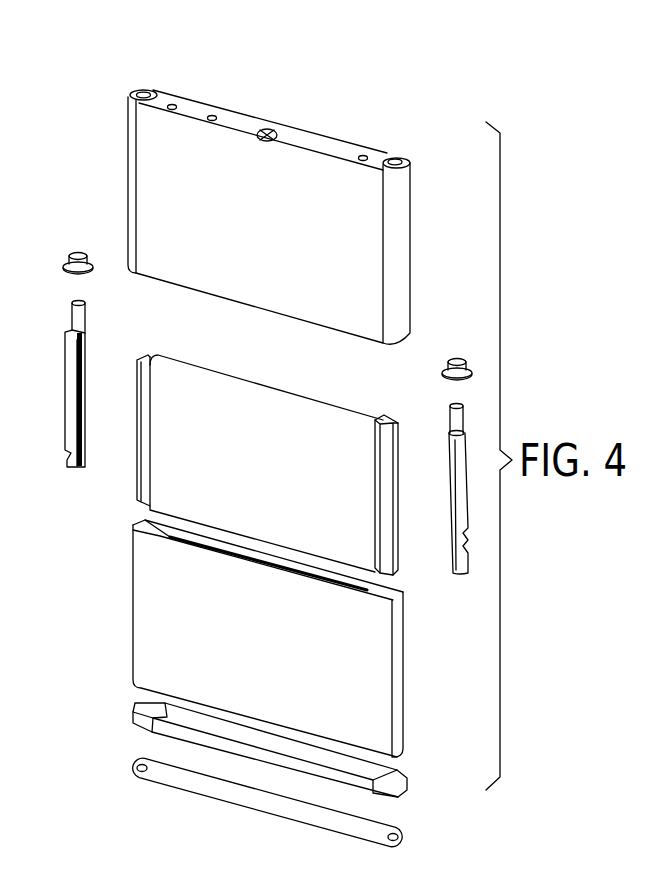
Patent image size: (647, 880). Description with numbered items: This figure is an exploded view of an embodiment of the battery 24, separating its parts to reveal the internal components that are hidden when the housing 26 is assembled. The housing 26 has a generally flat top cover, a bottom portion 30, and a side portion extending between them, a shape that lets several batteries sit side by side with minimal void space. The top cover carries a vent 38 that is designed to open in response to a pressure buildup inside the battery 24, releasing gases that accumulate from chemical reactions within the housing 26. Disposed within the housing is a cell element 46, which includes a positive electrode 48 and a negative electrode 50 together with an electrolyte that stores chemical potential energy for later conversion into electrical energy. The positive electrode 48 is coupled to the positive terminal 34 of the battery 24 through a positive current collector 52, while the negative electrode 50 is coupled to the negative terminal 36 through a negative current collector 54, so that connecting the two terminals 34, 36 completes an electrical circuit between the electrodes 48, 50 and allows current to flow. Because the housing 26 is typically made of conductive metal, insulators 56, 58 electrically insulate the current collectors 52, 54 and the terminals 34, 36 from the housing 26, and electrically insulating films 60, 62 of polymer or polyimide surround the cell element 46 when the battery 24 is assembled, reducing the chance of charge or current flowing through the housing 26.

The battery 24 is at (360, 96).
The housing 26 is at (270, 234).
The bottom portion 30 is at (262, 812).
The positive terminal 34 is at (72, 303).
The negative terminal 36 is at (450, 420).
The vent 38 is at (277, 130).
The cell element 46 is at (274, 479).
The positive electrode 48 is at (137, 420).
The negative electrode 50 is at (400, 422).
The positive current collector 52 is at (72, 393).
The negative current collector 54 is at (452, 488).
The insulator 56 is at (78, 252).
The insulator 58 is at (463, 357).
The electrically insulating film 60 is at (270, 662).
The electrically insulating film 62 is at (403, 787).